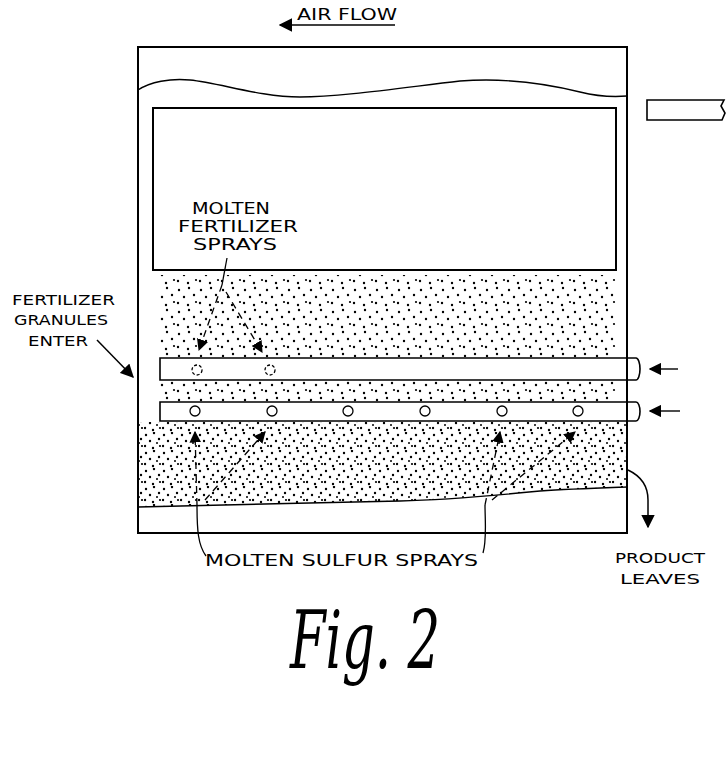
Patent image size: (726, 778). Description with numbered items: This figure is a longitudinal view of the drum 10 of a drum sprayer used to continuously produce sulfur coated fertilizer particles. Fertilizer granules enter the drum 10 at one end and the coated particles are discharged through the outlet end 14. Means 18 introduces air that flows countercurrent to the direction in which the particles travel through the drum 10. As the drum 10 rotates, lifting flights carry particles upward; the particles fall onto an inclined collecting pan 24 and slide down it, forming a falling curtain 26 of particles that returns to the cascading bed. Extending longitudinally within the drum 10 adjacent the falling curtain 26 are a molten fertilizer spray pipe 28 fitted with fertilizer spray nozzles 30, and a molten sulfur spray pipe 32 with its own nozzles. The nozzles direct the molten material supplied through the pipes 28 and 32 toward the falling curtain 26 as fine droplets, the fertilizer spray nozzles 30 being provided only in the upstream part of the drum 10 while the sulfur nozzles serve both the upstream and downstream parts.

The drum 10 is at (498, 47).
The outlet end 14 is at (628, 297).
The air introducing means 18 is at (672, 102).
The inclined collecting pan 24 is at (512, 90).
The falling curtain 26 is at (598, 322).
The molten fertilizer spray pipe 28 is at (640, 360).
The fertilizer spray nozzles 30 is at (204, 370).
The molten sulfur spray pipe 32 is at (640, 424).